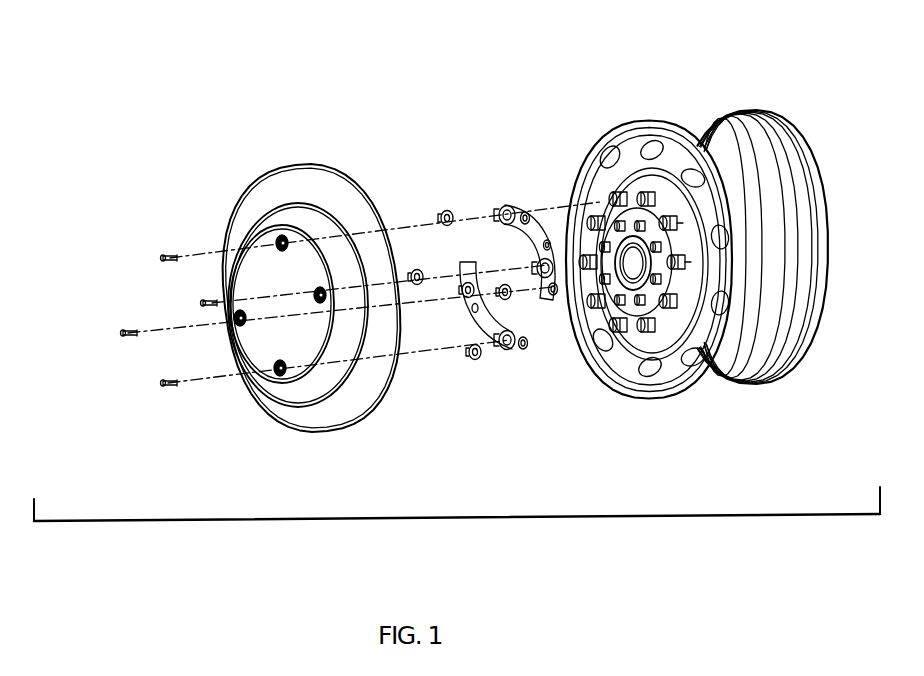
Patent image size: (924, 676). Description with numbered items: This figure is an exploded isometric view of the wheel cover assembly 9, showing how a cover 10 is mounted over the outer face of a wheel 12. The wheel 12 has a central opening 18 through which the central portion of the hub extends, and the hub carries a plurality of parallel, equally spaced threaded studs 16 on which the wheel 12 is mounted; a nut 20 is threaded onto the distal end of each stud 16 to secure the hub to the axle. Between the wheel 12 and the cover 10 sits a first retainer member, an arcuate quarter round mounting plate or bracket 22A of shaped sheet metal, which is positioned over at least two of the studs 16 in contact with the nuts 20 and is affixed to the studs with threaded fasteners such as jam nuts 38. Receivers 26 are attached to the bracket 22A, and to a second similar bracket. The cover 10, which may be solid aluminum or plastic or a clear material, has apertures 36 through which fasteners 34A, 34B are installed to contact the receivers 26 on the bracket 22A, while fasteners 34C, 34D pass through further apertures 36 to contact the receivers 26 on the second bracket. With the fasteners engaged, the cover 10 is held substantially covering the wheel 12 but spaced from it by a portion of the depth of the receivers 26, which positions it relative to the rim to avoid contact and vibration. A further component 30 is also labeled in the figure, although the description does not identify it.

The wheel cover assembly 9 is at (477, 514).
The cover 10 is at (307, 166).
The wheel 12 is at (738, 104).
The threaded studs 16 is at (648, 194).
The central opening 18 is at (668, 210).
The nut 20 is at (683, 270).
The bracket 22A is at (541, 238).
The receivers 26 is at (503, 208).
The mounting brackets 30 is at (467, 266).
The fastener 34A is at (165, 255).
The fastener 34B is at (203, 303).
The fastener 34C is at (167, 387).
The fastener 34D is at (126, 338).
The apertures 36 is at (322, 292).
The jam nut 38 is at (418, 270).